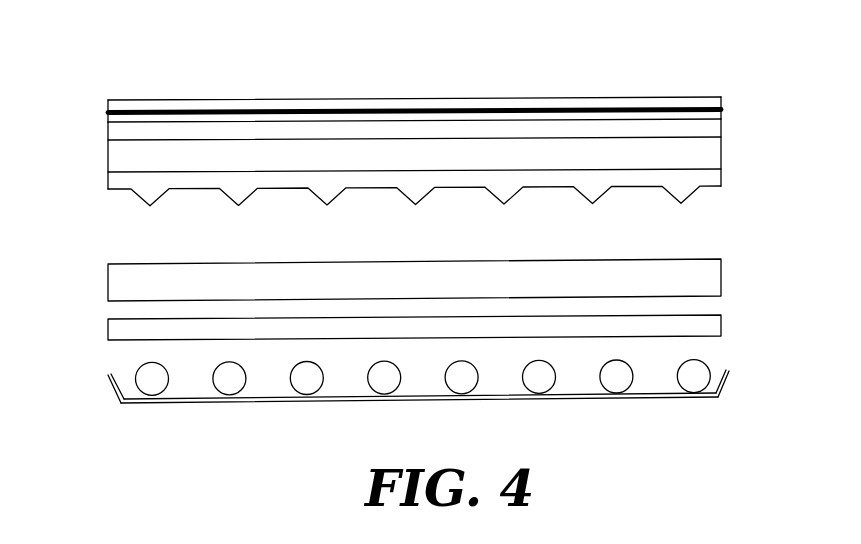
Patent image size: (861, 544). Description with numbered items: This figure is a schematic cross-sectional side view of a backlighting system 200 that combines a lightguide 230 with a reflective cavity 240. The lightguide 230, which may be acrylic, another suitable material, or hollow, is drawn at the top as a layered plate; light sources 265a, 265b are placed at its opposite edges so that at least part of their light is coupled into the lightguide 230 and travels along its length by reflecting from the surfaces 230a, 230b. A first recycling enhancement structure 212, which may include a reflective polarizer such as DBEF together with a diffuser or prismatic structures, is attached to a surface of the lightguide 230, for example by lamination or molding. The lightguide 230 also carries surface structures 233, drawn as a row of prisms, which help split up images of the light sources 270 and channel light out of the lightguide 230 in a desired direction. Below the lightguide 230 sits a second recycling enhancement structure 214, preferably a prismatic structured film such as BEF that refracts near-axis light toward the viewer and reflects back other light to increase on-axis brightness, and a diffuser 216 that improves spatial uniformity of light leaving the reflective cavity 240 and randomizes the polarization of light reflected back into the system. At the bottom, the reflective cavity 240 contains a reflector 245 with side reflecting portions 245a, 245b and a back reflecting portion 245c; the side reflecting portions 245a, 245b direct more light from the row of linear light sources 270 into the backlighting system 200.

The backlighting system 200 is at (640, 52).
The first recycling enhancement structure 212 is at (722, 104).
The second recycling enhancement structure 214 is at (716, 275).
The diffuser 216 is at (716, 322).
The lightguide 230 is at (421, 149).
The surface of the lightguide 230a is at (332, 122).
The surface of the lightguide 230b is at (419, 216).
The surface structures 233 is at (602, 193).
The reflective cavity 240 is at (186, 388).
The reflector 245 is at (419, 413).
The side reflecting portion 245a is at (727, 386).
The side reflecting portion 245b is at (115, 391).
The back reflecting portion 245c is at (599, 400).
The light source 265a is at (130, 157).
The light source 265b is at (722, 150).
The light sources 270 is at (424, 395).